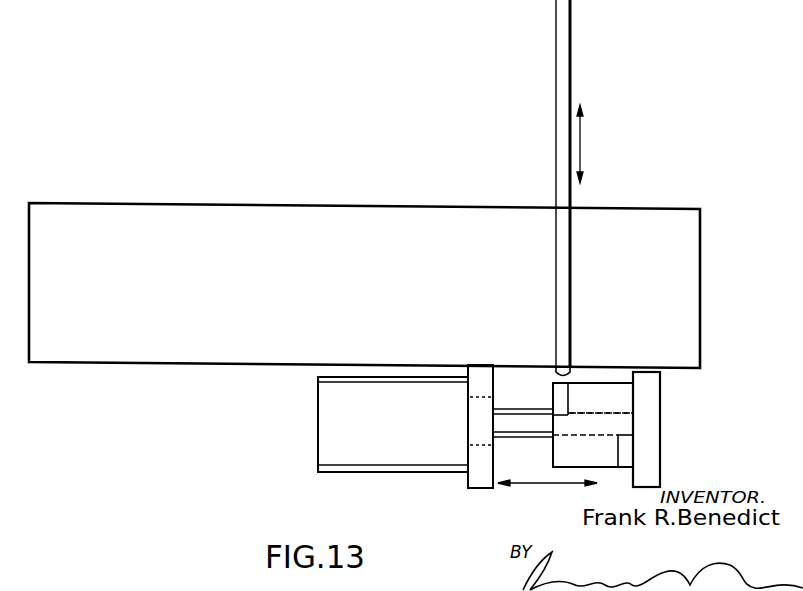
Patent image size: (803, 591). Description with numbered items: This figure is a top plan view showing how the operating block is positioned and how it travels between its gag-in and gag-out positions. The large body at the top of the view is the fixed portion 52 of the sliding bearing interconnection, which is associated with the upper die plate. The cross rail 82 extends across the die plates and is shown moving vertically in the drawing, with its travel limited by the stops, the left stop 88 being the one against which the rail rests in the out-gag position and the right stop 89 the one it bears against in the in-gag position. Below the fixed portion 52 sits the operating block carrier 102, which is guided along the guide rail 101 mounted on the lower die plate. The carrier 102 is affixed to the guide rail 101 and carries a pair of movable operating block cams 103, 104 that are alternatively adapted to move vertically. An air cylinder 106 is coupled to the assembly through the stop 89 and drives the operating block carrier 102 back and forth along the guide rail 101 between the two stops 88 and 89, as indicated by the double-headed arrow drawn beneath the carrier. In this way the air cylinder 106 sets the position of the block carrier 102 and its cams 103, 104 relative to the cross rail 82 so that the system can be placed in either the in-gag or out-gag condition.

The fixed portion 52 is at (266, 295).
The cross rail 82 is at (561, 118).
The stop 88 is at (660, 427).
The stop 89 is at (468, 488).
The guide rail 101 is at (508, 410).
The operating block carrier 102 is at (620, 403).
The operating block cam 103 is at (555, 398).
The operating block cam 104 is at (625, 455).
The air cylinder 106 is at (412, 427).